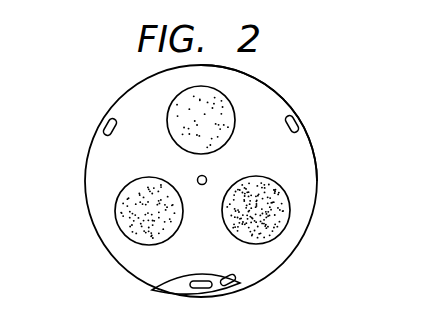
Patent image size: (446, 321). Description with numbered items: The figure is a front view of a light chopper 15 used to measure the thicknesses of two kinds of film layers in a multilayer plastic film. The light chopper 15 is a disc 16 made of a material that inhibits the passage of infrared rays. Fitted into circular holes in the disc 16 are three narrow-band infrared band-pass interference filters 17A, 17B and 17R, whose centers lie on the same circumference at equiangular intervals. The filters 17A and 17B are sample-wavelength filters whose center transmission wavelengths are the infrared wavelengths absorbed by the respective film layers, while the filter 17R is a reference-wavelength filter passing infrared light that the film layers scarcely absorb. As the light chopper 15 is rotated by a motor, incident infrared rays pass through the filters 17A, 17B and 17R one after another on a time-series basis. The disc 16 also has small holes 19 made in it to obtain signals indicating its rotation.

The light chopper 15 is at (292, 105).
The disc 16 is at (284, 244).
The narrow-band infrared band-pass interference filter 17A is at (231, 110).
The narrow-band infrared band-pass interference filter 17R is at (128, 232).
The narrow-band infrared band-pass interference filter 17B is at (283, 208).
The small holes 19 is at (105, 125).